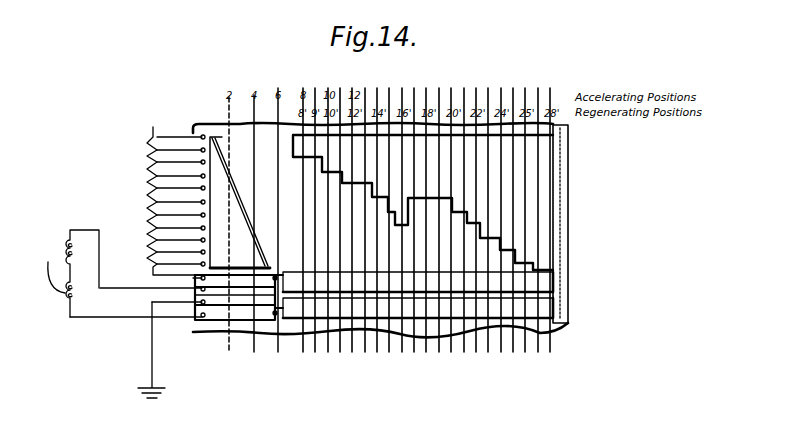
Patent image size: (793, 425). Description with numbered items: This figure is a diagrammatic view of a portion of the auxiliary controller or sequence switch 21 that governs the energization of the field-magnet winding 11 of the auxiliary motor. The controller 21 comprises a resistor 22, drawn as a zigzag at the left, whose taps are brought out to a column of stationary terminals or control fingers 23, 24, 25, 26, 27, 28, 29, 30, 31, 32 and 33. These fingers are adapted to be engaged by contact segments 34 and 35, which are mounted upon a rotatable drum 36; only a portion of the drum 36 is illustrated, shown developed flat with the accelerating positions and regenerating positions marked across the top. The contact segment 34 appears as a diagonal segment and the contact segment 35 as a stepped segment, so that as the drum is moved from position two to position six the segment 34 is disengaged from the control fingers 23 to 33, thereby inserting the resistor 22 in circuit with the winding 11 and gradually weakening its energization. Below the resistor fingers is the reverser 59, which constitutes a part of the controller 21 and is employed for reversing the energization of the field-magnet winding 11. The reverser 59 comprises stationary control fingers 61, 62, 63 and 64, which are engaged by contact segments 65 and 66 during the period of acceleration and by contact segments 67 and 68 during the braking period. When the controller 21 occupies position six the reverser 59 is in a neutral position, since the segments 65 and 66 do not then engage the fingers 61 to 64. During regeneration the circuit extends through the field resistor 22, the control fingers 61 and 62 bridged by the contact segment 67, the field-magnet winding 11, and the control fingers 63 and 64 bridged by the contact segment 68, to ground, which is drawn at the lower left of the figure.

The field-magnet winding 11 is at (66, 255).
The auxiliary controller or sequence switch 21 is at (271, 363).
The resistor 22 is at (150, 200).
The control finger 23 is at (199, 137).
The control finger 24 is at (199, 150).
The control finger 25 is at (199, 162).
The control finger 26 is at (199, 176).
The control finger 27 is at (199, 188).
The control finger 28 is at (199, 202).
The control finger 29 is at (199, 215).
The control finger 30 is at (199, 228).
The control finger 31 is at (199, 240).
The control finger 32 is at (199, 252).
The control finger 33 is at (199, 264).
The contact segment 34 is at (228, 180).
The contact segment 35 is at (430, 201).
The rotatable drum 36 is at (560, 213).
The reverser 59 is at (156, 359).
The control finger 61 is at (198, 280).
The control finger 62 is at (198, 291).
The control finger 63 is at (198, 304).
The control finger 64 is at (198, 317).
The contact segment 65 is at (268, 264).
The contact segment 66 is at (233, 295).
The contact segment 67 is at (545, 284).
The contact segment 68 is at (545, 318).